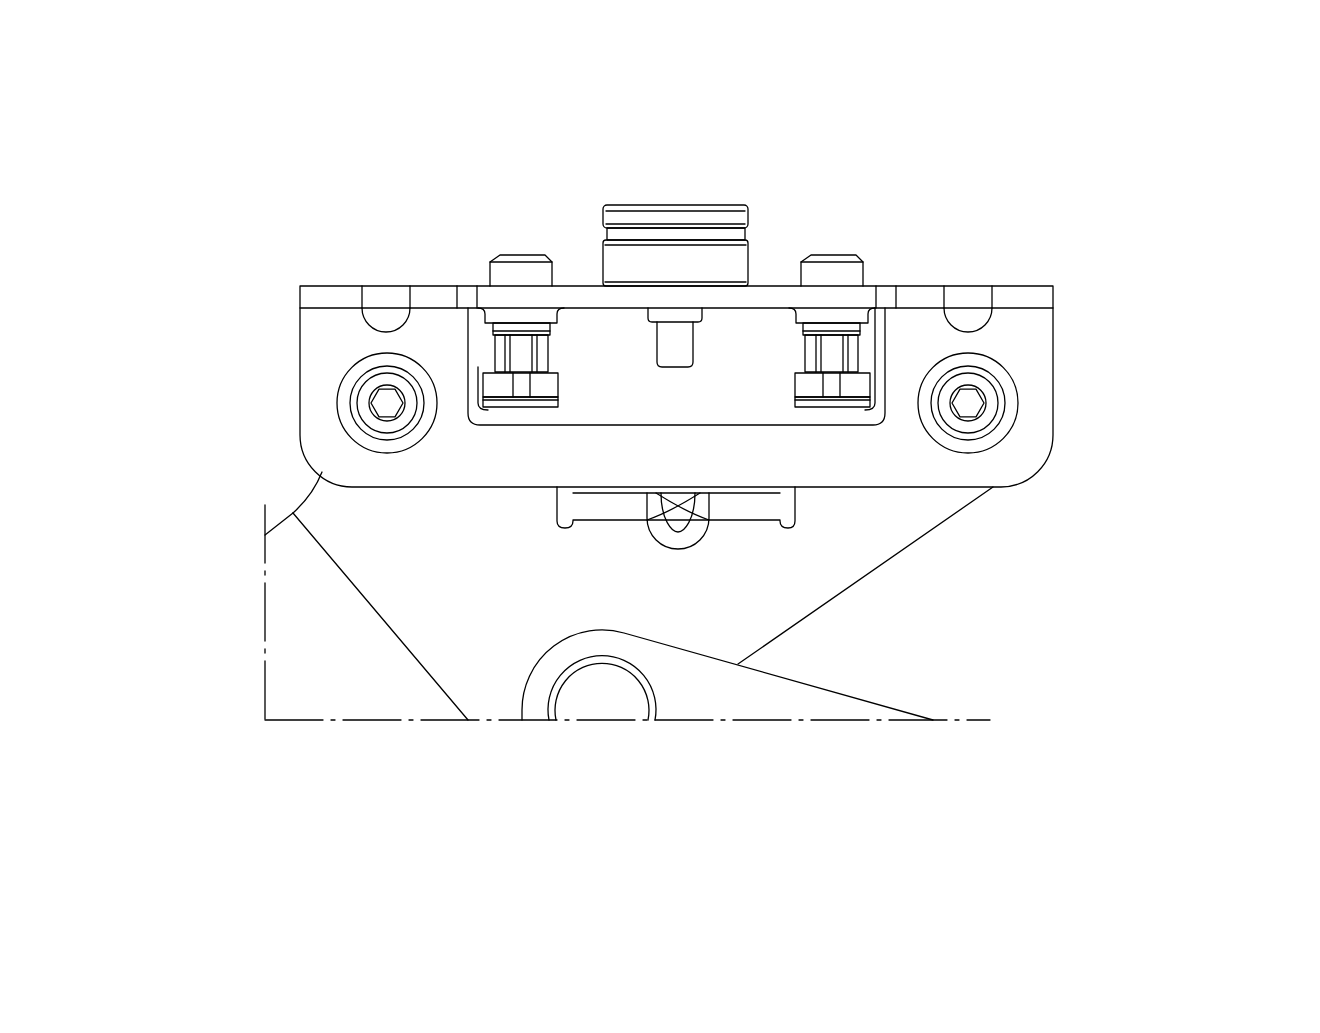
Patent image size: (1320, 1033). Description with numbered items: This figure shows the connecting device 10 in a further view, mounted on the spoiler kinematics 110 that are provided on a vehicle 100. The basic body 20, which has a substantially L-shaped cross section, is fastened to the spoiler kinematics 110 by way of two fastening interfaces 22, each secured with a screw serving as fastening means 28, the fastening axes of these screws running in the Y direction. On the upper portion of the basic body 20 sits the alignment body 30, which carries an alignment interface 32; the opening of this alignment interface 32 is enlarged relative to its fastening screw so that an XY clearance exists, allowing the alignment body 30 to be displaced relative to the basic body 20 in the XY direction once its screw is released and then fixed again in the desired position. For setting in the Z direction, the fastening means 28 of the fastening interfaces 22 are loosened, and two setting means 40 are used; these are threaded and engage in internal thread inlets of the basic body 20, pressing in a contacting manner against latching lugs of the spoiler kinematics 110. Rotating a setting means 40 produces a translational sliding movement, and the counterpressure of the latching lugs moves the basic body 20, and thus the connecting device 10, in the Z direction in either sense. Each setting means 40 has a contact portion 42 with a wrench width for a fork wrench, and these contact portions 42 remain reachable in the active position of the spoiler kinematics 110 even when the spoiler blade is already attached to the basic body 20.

The vehicle 100 is at (303, 183).
The connecting device 10 is at (1145, 303).
The basic body 20 is at (1032, 335).
The fastening interface 22 is at (352, 409).
The fastening means 28 is at (363, 418).
The alignment body 30 is at (718, 217).
The alignment interface 32 is at (675, 353).
The setting means 40 is at (518, 255).
The contact portion 42 is at (522, 362).
The spoiler kinematics 110 is at (290, 583).